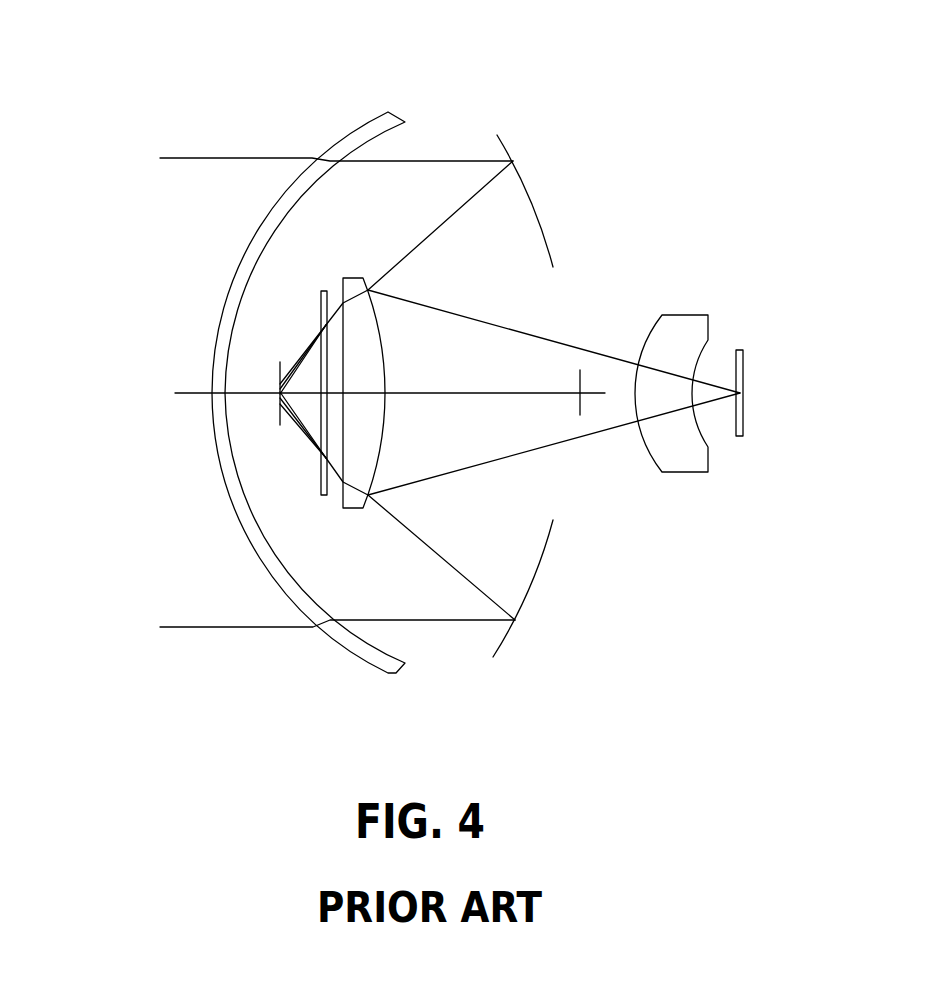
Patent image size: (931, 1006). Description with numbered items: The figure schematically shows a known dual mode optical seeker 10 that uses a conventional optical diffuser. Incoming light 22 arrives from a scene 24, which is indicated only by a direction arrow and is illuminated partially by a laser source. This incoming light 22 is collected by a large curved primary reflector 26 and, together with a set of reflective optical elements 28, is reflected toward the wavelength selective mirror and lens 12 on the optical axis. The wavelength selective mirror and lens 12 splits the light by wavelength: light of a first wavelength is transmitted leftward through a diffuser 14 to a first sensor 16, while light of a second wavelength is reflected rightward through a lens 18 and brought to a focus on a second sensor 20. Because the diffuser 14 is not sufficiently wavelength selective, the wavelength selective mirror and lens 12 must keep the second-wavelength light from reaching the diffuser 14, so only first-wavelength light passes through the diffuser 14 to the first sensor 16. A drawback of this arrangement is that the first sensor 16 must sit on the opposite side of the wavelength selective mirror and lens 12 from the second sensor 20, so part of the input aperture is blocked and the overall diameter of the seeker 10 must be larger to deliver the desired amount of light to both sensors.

The dual mode optical seeker 10 is at (615, 166).
The wavelength selective mirror and lens 12 is at (396, 376).
The diffuser 14 is at (324, 502).
The first sensor 16 is at (274, 413).
The lens 18 is at (685, 308).
The second sensor 20 is at (753, 370).
The incoming light 22 is at (228, 157).
The scene 24 is at (64, 274).
The primary mirror 26 is at (403, 113).
The reflective optical elements 28 is at (550, 237).